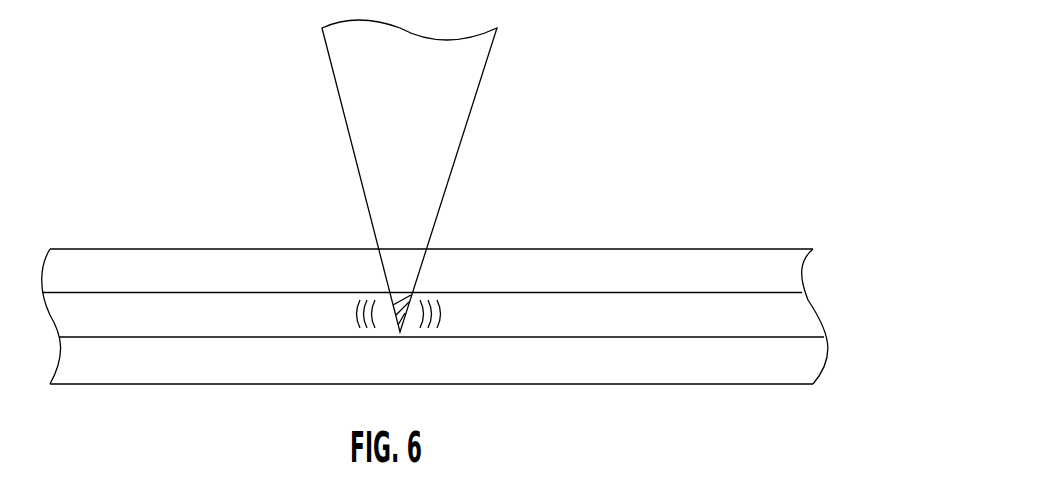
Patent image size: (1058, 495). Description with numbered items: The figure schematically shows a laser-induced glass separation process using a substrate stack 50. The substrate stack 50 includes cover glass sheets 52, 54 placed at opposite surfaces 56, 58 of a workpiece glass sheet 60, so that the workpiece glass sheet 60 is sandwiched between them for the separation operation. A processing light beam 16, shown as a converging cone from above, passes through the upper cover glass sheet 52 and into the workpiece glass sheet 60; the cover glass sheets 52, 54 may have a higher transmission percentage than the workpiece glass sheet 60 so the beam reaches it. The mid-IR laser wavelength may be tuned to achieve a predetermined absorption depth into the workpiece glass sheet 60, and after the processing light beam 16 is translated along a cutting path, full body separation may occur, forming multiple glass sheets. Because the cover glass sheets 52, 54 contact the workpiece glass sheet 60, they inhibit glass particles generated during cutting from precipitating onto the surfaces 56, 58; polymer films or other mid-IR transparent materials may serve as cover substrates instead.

The processing light beam 16 is at (488, 115).
The substrate stack 50 is at (663, 198).
The cover glass sheet 52 is at (513, 280).
The cover glass sheet 54 is at (615, 365).
The surface of workpiece glass sheet 56 is at (753, 292).
The surface of workpiece glass sheet 58 is at (770, 337).
The workpiece glass sheet 60 is at (782, 318).